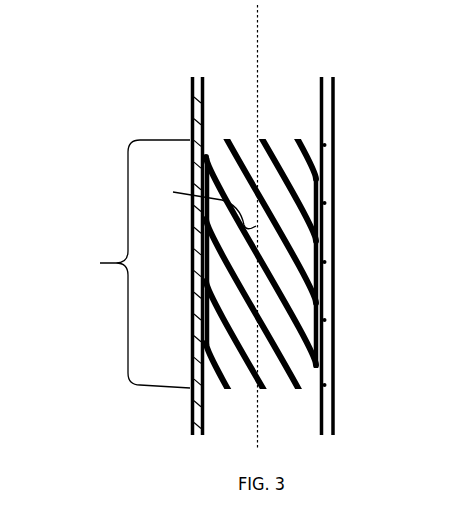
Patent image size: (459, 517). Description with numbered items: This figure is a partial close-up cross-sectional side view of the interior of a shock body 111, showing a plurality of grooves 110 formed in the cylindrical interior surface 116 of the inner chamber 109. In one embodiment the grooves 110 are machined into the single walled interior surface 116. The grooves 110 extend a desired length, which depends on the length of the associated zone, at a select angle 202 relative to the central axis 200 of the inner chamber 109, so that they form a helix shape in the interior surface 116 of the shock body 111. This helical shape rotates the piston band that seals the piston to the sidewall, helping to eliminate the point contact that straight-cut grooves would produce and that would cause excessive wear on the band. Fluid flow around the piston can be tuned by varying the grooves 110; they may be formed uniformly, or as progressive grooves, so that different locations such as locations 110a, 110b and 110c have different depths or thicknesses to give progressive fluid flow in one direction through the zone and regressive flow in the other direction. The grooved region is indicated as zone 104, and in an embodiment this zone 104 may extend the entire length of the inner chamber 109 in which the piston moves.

The zone 104 is at (100, 263).
The inner chamber 109 is at (283, 88).
The grooves 110 is at (305, 258).
The location 110a is at (316, 329).
The location 110b is at (259, 258).
The location 110c is at (211, 177).
The shock body 111 is at (335, 103).
The cylindrical interior surface 116 is at (202, 88).
The central axis 200 is at (258, 63).
The select angle 202 is at (199, 206).